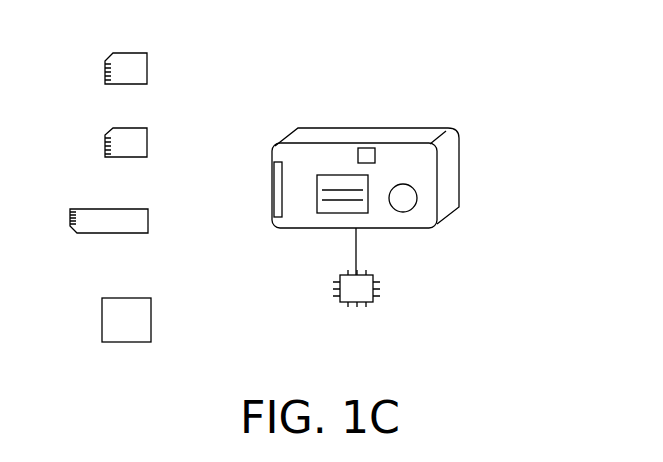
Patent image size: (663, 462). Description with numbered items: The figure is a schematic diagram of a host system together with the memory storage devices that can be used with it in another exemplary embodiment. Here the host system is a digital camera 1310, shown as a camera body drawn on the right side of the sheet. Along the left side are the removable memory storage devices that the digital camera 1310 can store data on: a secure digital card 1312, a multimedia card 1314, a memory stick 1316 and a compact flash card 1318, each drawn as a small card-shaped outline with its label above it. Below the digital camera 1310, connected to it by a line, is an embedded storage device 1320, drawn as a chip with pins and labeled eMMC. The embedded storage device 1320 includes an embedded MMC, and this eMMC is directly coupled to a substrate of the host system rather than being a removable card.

The digital camera 1310 is at (460, 163).
The secure digital (SD) card 1312 is at (147, 62).
The multimedia card (MMC) card 1314 is at (147, 137).
The memory stick (MS) 1316 is at (148, 219).
The compact flash (CF) card 1318 is at (151, 313).
The embedded storage device 1320 is at (376, 292).